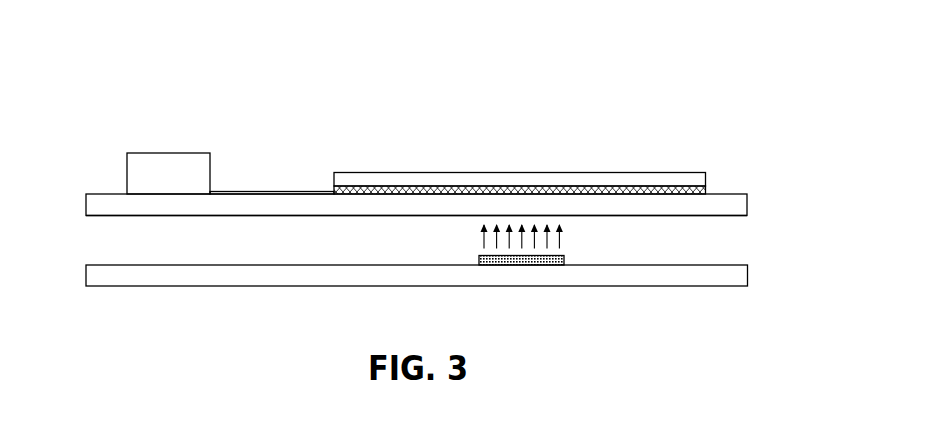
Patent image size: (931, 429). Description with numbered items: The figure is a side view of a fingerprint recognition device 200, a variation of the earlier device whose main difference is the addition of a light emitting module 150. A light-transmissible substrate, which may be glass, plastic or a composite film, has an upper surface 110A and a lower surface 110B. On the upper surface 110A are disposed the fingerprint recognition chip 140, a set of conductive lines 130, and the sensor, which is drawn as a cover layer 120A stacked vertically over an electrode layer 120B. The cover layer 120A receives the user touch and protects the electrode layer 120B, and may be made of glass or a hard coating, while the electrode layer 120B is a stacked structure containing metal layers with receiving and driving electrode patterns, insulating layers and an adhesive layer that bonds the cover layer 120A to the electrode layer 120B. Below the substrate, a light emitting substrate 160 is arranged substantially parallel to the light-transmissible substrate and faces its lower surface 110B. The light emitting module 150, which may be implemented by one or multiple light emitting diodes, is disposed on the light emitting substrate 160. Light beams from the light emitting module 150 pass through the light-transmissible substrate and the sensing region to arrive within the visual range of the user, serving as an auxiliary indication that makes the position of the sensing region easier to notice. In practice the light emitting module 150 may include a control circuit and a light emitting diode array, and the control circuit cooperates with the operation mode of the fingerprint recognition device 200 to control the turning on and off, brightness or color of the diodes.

The fingerprint recognition device 200 is at (74, 98).
The upper surface 110A is at (93, 193).
The lower surface 110B is at (98, 217).
The cover layer 120A is at (706, 173).
The electrode layer 120B is at (708, 189).
The conductive lines 130 is at (290, 191).
The fingerprint recognition chip 140 is at (200, 153).
The light emitting module 150 is at (565, 256).
The light emitting substrate 160 is at (748, 264).